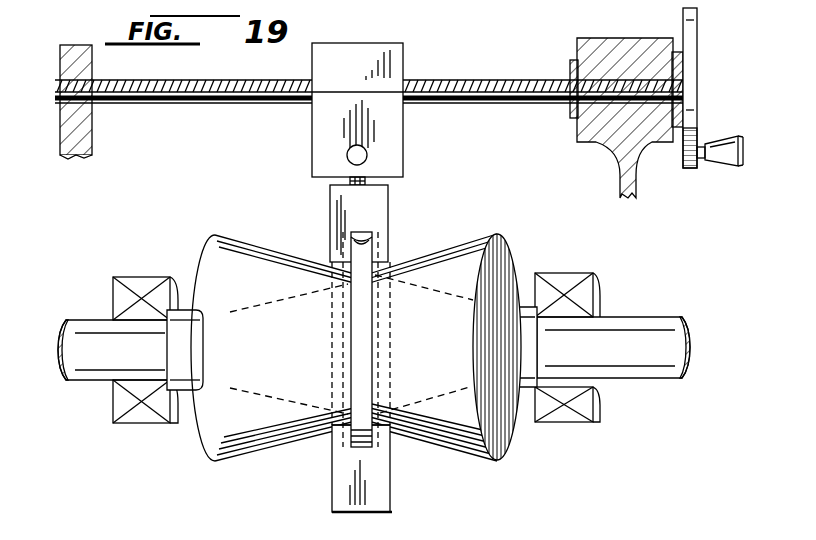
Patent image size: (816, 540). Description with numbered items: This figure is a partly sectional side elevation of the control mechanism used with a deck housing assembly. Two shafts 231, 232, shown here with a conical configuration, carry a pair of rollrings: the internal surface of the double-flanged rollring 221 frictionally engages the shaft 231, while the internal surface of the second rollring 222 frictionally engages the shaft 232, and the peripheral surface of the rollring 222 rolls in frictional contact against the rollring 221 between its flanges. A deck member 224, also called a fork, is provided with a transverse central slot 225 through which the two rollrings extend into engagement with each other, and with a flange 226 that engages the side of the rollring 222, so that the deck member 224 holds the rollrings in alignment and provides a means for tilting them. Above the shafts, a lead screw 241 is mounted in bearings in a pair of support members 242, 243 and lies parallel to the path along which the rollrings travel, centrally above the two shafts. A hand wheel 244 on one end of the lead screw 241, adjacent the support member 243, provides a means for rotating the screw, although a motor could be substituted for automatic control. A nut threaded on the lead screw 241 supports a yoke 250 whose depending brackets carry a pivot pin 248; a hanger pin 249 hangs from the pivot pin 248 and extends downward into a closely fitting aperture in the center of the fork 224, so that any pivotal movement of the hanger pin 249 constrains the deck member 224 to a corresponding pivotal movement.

The double-flanged rollring 221 is at (375, 336).
The second rollring 222 is at (365, 246).
The deck member 224 is at (376, 200).
The transverse central slot 225 is at (367, 233).
The flange 226 is at (340, 438).
The shaft 231 is at (276, 264).
The shaft 232 is at (470, 270).
The lead screw 241 is at (484, 84).
The support member 242 is at (73, 47).
The support member 243 is at (637, 48).
The hand wheel 244 is at (690, 64).
The pivot pin 248 is at (363, 156).
The hanger pin 249 is at (350, 181).
The yoke 250 is at (392, 62).